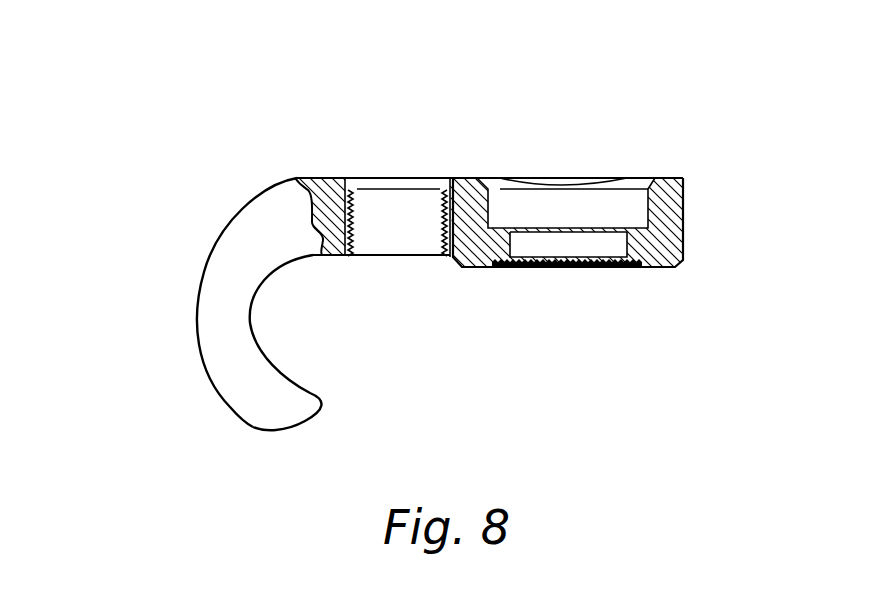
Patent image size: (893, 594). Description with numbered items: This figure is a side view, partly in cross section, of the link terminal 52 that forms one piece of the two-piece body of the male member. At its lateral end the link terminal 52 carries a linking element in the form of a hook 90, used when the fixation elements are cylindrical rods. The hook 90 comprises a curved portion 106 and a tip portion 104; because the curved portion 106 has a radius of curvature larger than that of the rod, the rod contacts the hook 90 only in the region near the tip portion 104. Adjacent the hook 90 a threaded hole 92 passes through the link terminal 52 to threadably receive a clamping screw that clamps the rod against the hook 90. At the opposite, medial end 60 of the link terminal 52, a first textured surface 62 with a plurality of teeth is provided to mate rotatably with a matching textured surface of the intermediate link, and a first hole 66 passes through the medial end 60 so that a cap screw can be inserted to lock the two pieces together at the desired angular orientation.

The link terminal 52 is at (370, 135).
The medial end 60 is at (683, 207).
The first textured surface 62 is at (608, 270).
The first hole 66 is at (585, 183).
The hook 90 is at (181, 305).
The threaded hole 92 is at (392, 232).
The tip portion 104 is at (112, 257).
The curved portion 106 is at (205, 268).